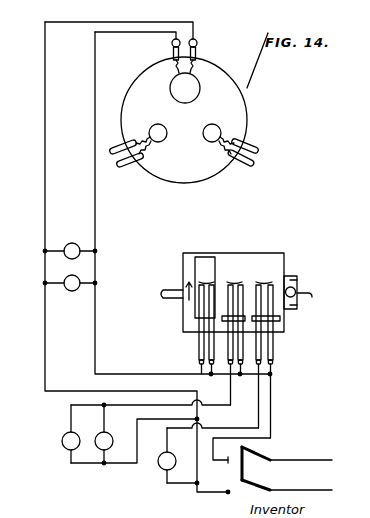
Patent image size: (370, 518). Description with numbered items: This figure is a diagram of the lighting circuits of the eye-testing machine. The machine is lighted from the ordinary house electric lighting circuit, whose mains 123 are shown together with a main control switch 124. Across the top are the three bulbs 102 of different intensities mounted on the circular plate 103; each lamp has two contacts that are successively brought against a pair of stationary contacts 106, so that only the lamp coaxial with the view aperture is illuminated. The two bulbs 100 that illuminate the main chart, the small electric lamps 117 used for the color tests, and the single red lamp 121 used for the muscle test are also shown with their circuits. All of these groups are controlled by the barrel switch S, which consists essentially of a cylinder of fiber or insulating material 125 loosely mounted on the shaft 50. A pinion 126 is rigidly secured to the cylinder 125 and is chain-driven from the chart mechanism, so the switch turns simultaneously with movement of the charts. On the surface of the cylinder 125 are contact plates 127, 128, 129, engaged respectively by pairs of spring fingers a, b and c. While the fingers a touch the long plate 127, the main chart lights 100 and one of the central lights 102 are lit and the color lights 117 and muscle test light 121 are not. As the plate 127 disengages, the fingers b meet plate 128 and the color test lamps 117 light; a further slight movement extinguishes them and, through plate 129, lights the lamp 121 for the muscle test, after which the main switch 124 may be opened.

The barrel switch S is at (280, 252).
The shaft 50 is at (312, 297).
The bulbs 100 is at (80, 279).
The bulbs 102 is at (179, 101).
The circular plate 103 is at (243, 107).
The stationary contacts 106 is at (183, 47).
The electric lamps 117 is at (98, 446).
The lamp 121 is at (162, 467).
The mains 123 is at (316, 487).
The main control switch 124 is at (260, 453).
The cylinder of insulating material 125 is at (240, 263).
The pinion 126 is at (290, 280).
The contact plate 127 is at (198, 254).
The contact plate 128 is at (223, 320).
The contact plate 129 is at (275, 327).